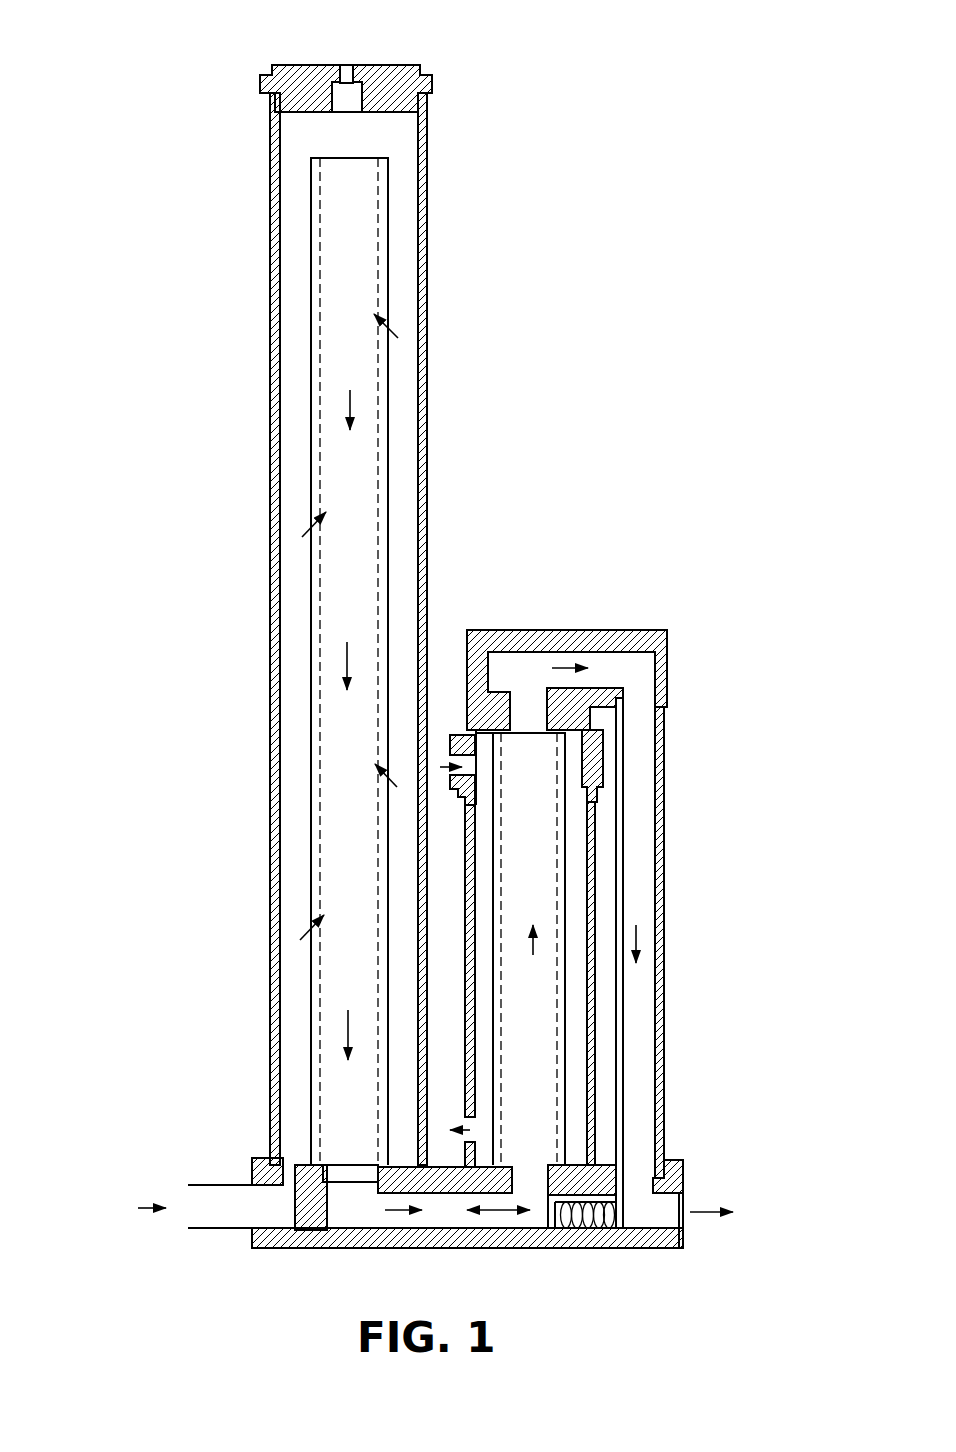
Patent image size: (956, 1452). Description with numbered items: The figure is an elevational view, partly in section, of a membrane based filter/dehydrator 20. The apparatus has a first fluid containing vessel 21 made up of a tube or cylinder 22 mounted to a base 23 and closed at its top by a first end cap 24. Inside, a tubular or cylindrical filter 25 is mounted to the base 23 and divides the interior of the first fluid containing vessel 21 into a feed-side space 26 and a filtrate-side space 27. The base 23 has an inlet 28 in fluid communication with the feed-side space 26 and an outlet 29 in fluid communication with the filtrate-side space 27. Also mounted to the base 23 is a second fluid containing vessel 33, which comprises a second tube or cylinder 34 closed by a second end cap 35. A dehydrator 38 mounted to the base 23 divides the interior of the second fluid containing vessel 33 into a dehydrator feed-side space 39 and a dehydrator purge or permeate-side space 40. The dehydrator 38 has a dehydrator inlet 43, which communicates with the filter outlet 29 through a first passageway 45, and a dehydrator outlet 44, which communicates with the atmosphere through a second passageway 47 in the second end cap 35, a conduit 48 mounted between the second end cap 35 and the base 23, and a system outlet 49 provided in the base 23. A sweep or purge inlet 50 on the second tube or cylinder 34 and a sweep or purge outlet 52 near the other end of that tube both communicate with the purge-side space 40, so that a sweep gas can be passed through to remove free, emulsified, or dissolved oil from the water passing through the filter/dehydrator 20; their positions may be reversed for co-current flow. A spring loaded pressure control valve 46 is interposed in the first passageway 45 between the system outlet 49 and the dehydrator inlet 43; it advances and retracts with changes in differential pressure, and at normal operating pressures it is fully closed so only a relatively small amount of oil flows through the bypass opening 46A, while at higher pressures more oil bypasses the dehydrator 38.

The membrane based filter/dehydrator 20 is at (607, 200).
The first fluid containing vessel 21 is at (430, 333).
The tube or cylinder 22 is at (427, 195).
The base 23 is at (292, 1250).
The first end cap 24 is at (385, 67).
The filter 25 is at (365, 606).
The feed-side space 26 is at (288, 627).
The filtrate-side space 27 is at (335, 836).
The inlet 28 is at (262, 1203).
The outlet 29 is at (355, 1195).
The second fluid containing vessel 33 is at (598, 890).
The second tube or cylinder 34 is at (595, 1076).
The second end cap 35 is at (583, 630).
The dehydrator 38 is at (565, 850).
The dehydrator feed-side space 39 is at (543, 1018).
The dehydrator purge or permeate-side space 40 is at (482, 886).
The dehydrator inlet 43 is at (523, 1178).
The dehydrator outlet 44 is at (533, 755).
The first passageway 45 is at (443, 1215).
The pressure control valve 46 is at (600, 1215).
The bypass opening 46A is at (553, 1210).
The second passageway 47 is at (617, 665).
The conduit 48 is at (660, 958).
The system outlet 49 is at (672, 1213).
The sweep or purge inlet 50 is at (450, 758).
The sweep or purge outlet 52 is at (463, 1120).